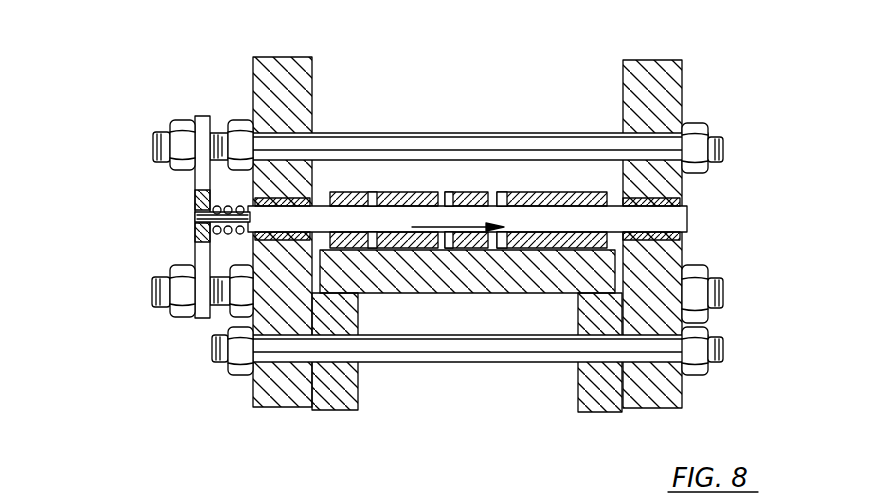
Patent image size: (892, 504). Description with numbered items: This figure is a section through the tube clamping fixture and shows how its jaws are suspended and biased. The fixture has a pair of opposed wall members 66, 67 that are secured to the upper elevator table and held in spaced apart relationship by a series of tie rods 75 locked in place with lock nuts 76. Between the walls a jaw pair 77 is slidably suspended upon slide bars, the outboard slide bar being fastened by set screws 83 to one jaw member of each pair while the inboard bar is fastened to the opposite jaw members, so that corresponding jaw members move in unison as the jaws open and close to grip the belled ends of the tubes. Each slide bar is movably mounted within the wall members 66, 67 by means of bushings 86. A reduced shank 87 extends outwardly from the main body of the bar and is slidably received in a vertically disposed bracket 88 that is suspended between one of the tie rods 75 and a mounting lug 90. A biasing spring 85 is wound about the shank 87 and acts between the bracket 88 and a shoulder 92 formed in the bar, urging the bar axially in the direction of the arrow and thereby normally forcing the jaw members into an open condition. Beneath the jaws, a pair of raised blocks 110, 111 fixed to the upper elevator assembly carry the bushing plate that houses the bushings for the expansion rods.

The wall member 66 is at (641, 60).
The wall member 67 is at (281, 58).
The tie rod 75 is at (538, 133).
The lock nut 76 is at (236, 120).
The jaw pair 77 is at (467, 227).
The set screw 83 is at (378, 192).
The biasing spring 85 is at (224, 240).
The bushing 86 is at (205, 196).
The reduced shank 87 is at (200, 213).
The bracket 88 is at (202, 318).
The mounting lug 90 is at (140, 292).
The shoulder 92 is at (313, 197).
The raised block 110 is at (336, 410).
The raised block 111 is at (602, 412).